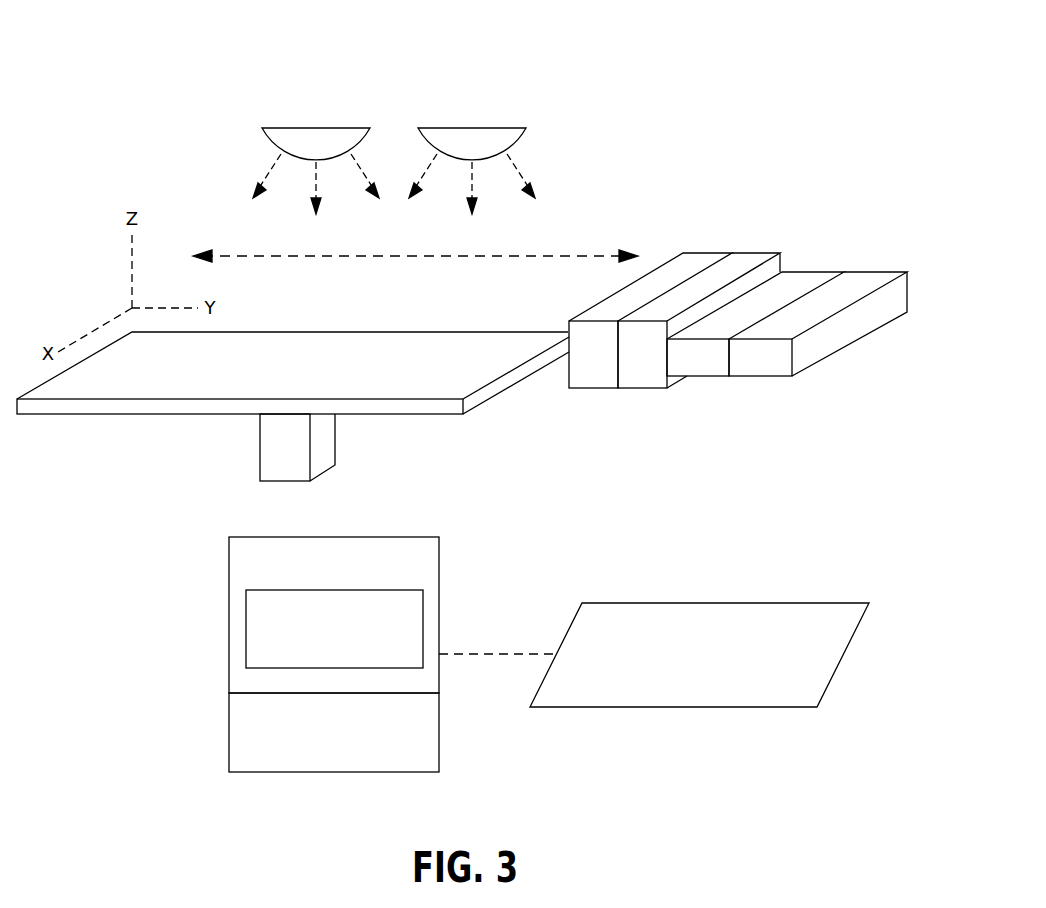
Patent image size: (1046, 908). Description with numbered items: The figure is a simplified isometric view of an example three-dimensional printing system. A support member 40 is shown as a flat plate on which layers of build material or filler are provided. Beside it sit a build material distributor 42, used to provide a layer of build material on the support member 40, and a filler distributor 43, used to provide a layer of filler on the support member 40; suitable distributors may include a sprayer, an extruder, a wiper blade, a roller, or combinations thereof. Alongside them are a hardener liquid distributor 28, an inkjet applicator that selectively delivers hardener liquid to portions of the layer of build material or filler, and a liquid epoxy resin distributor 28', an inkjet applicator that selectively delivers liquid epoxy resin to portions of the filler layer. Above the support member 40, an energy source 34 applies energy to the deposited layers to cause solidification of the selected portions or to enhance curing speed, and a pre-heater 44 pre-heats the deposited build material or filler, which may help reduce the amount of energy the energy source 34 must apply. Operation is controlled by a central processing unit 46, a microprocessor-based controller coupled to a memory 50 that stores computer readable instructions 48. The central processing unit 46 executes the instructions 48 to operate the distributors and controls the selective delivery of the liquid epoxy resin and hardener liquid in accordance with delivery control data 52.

The energy source 34 is at (316, 128).
The pre-heater 44 is at (472, 128).
The support member 40 is at (348, 332).
The build material distributor 42 is at (705, 253).
The filler distributor 43 is at (755, 253).
The hardener liquid distributor 28 is at (755, 279).
The liquid epoxy resin distributor 28' is at (818, 279).
The memory 50 is at (247, 563).
The instructions 48 is at (247, 628).
The central processing unit 46 is at (229, 731).
The delivery control data 52 is at (724, 603).